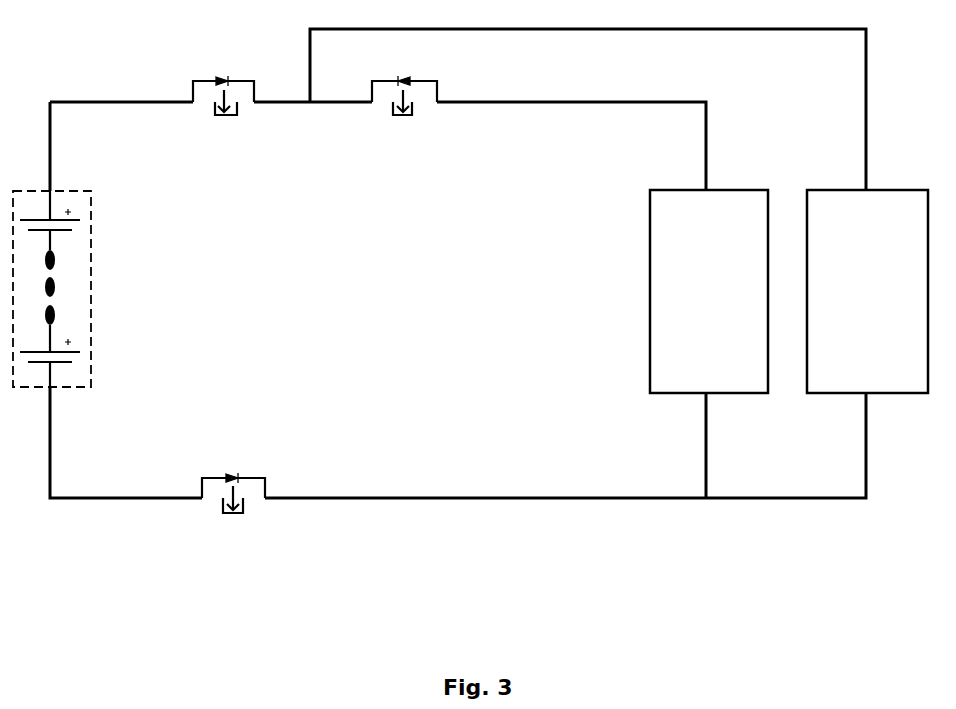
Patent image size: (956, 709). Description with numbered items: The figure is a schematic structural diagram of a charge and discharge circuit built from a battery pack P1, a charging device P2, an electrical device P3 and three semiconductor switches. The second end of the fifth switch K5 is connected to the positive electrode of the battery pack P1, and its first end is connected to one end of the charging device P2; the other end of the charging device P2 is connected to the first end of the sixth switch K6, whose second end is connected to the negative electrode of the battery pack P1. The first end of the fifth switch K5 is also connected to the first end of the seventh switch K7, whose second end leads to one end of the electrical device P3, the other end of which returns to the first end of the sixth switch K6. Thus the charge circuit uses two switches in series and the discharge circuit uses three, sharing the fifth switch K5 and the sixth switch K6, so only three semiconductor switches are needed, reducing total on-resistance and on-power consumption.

The fifth switch K5 is at (217, 115).
The sixth switch K6 is at (225, 540).
The seventh switch K7 is at (413, 115).
The battery pack P1 is at (90, 247).
The charging device P2 is at (867, 291).
The electrical device P3 is at (709, 291).